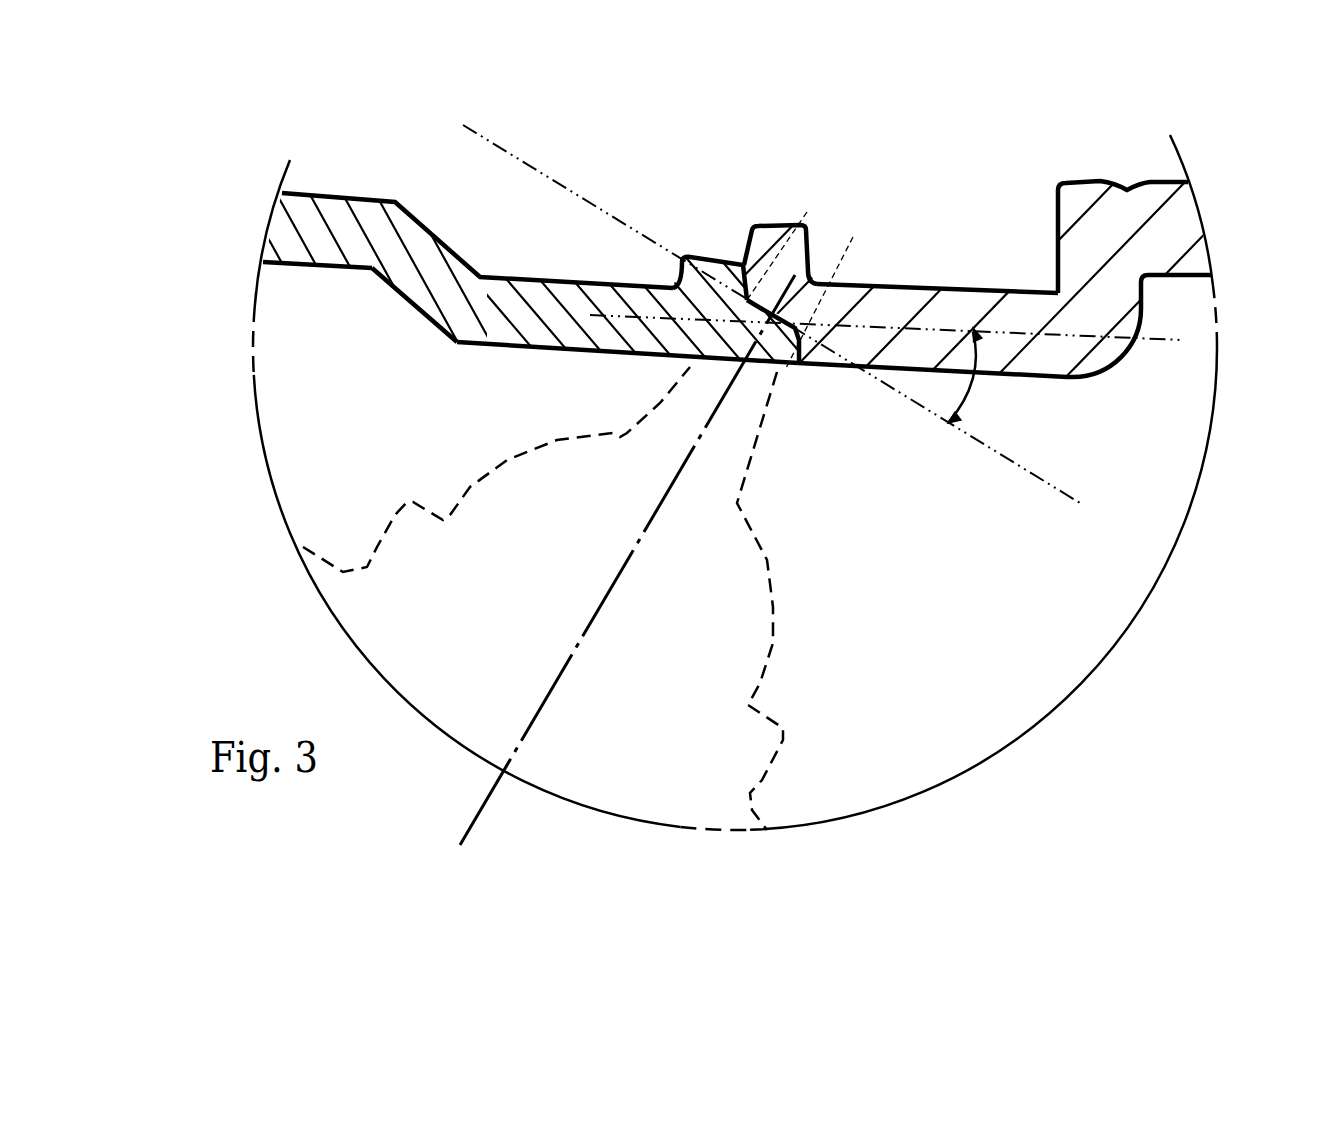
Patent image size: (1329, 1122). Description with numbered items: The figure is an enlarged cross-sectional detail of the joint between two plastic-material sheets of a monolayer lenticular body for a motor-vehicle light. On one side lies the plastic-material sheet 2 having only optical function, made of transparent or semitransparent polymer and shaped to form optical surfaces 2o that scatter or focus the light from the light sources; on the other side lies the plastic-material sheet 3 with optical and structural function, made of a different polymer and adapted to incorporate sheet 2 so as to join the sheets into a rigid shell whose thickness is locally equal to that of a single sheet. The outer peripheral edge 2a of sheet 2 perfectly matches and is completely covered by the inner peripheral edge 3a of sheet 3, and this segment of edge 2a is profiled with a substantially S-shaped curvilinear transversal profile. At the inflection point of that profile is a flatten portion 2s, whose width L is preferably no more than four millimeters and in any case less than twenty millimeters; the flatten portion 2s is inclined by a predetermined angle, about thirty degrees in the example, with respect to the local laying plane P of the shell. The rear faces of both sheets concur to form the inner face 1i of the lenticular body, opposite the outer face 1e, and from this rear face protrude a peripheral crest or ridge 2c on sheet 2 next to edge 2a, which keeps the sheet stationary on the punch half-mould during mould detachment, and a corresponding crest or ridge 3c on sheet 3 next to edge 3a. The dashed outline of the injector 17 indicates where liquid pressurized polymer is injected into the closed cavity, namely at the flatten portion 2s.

The outer surface of the first member 1e is at (427, 320).
The inner face 1i is at (488, 272).
The plastic-material sheet having only optical function 2 is at (977, 303).
The outer peripheral edge 2a is at (742, 303).
The peripheral crest or ridge 2c is at (767, 235).
The optical surfaces 2o is at (1092, 168).
The flatten portion 2s is at (757, 366).
The plastic-material sheet with optical and structural function 3 is at (335, 230).
The inner peripheral edge 3a is at (808, 353).
The peripheral crest or ridge 3c is at (710, 257).
The injector 17 is at (785, 645).
The width of the flatten portion L is at (807, 210).
The local laying plane P is at (886, 346).